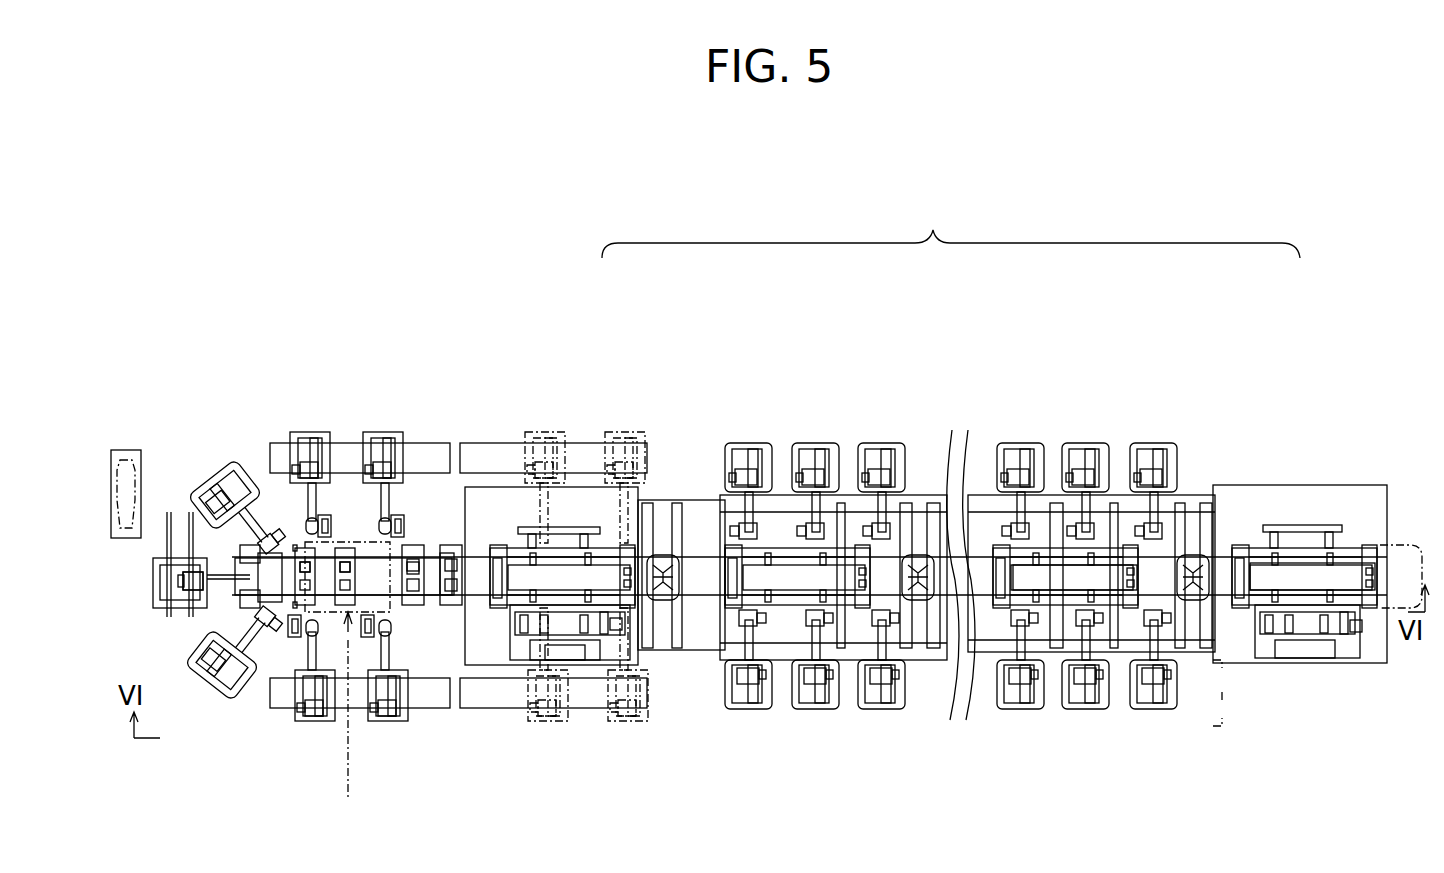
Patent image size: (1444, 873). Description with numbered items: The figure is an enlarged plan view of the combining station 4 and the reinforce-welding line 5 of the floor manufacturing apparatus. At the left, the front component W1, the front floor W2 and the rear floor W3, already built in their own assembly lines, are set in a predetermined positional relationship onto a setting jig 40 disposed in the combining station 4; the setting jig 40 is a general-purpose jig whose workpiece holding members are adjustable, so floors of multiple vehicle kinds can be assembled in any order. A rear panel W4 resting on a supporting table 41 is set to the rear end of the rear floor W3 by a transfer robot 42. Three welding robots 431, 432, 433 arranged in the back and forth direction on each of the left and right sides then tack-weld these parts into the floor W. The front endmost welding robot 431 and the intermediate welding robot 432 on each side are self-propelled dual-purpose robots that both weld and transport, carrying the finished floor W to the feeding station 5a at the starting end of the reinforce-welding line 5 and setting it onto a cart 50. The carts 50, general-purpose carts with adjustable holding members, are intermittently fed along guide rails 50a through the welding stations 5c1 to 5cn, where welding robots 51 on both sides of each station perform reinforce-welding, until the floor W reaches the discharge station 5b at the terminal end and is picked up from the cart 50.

The combining station 4 is at (340, 352).
The reinforce-welding line 5 is at (926, 431).
The feeding station 5a is at (620, 355).
The discharge station 5b is at (1268, 355).
The welding station 5c1 is at (835, 355).
The welding station 5cn is at (1075, 355).
The setting jig 40 is at (408, 612).
The supporting table 41 is at (125, 538).
The transfer robot 42 is at (190, 598).
The welding robot 431 is at (648, 806).
The welding robot 432 is at (583, 790).
The welding robot 433 is at (205, 745).
The cart 50 is at (572, 570).
The guide rails 50a is at (698, 560).
The welding robot 51 is at (745, 448).
The floor W is at (348, 800).
The front component W1 is at (430, 550).
The front floor W2 is at (350, 545).
The rear floor W3 is at (290, 552).
The rear panel W4 is at (124, 460).